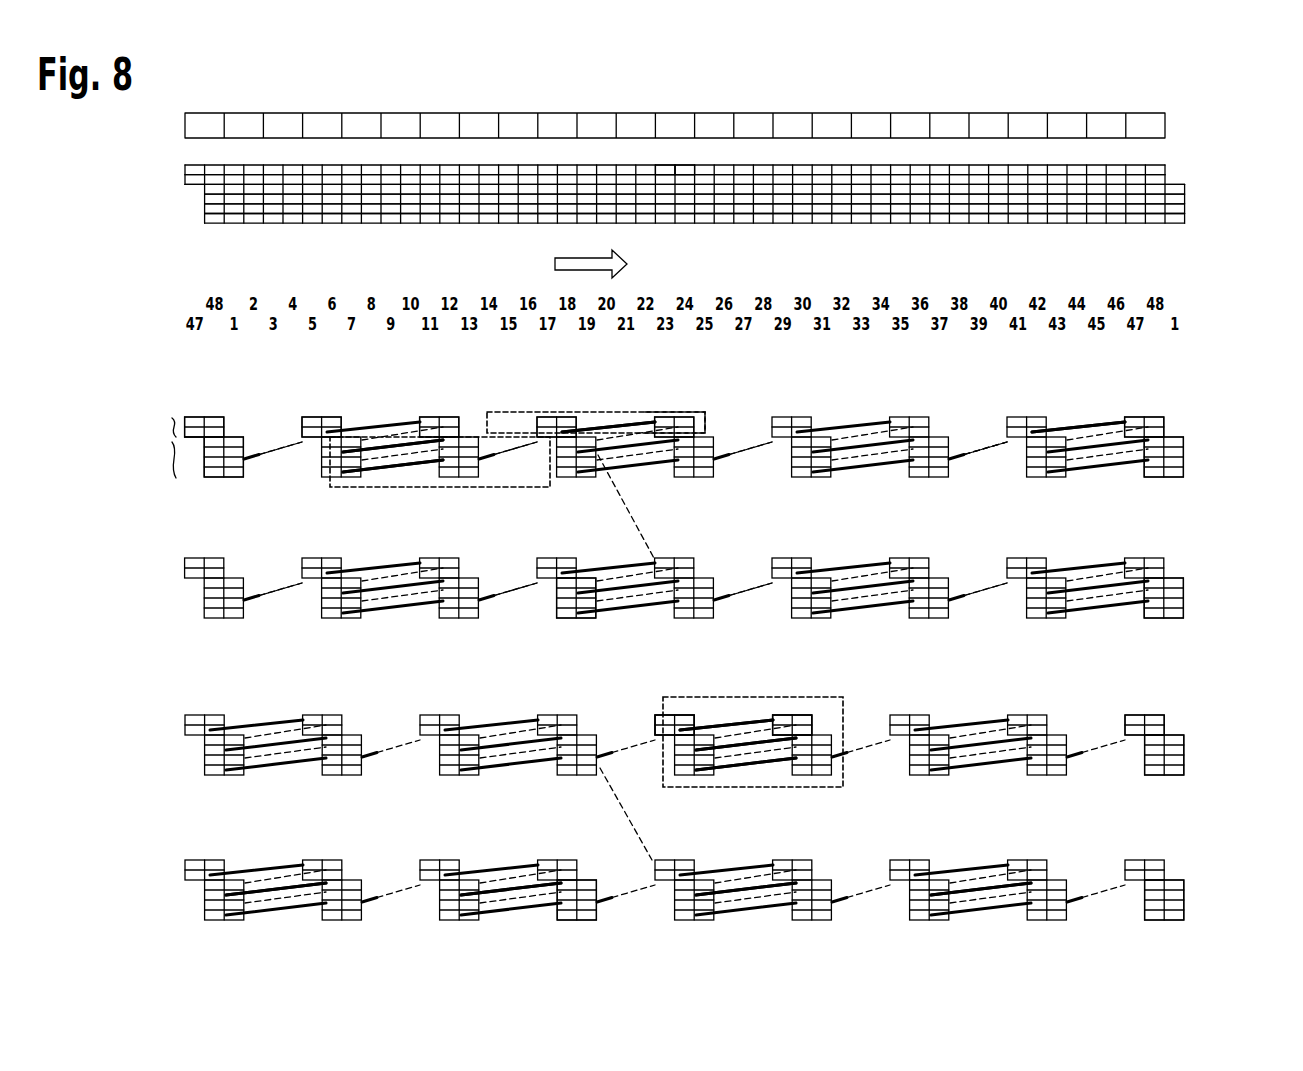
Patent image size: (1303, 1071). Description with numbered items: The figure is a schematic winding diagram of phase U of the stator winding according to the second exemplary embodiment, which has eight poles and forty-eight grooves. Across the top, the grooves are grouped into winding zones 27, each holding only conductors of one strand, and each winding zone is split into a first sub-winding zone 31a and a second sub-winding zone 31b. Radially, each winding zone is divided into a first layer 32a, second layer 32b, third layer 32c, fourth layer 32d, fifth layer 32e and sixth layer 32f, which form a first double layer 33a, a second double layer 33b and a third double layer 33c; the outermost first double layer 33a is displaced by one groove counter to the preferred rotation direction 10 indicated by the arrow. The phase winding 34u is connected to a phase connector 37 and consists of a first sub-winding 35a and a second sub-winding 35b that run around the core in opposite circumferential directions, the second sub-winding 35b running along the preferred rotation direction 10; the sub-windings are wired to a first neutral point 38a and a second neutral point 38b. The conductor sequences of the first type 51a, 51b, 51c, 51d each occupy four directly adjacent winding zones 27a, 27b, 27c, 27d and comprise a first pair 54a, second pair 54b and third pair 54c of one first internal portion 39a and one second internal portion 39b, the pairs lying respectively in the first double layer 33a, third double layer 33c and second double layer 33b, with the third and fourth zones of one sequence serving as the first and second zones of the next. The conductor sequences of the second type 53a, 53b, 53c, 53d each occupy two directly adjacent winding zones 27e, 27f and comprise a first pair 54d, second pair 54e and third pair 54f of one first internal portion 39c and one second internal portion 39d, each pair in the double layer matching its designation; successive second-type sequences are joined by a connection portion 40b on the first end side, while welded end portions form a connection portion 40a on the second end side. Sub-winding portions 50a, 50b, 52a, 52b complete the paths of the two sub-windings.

The preferred rotation direction 10 is at (555, 263).
The winding zone 27 is at (550, 163).
The first winding zone 27a is at (667, 417).
The second winding zone 27b is at (556, 417).
The third winding zone 27c is at (468, 420).
The fourth winding zone 27d is at (350, 420).
The winding zone of the second type 27e is at (718, 697).
The winding zone of the second type 27f is at (825, 712).
The first sub-winding zone 31a is at (657, 163).
The second sub-winding zone 31b is at (683, 163).
The first layer 32a is at (185, 168).
The second layer 32b is at (182, 178).
The third layer 32c is at (196, 190).
The fourth layer 32d is at (196, 200).
The fifth layer 32e is at (203, 213).
The sixth layer 32f is at (203, 218).
The first double layer 33a is at (174, 427).
The second double layer 33b is at (170, 442).
The third double layer 33c is at (184, 458).
The phase winding 34u is at (1215, 398).
The first sub-winding 35a is at (1197, 440).
The second sub-winding 35b is at (1195, 712).
The phase connector 37 is at (692, 381).
The first neutral point 38a is at (572, 620).
The second neutral point 38b is at (572, 928).
The first internal portion 39a is at (686, 410).
The second internal portion 39b is at (580, 463).
The first internal portion 39c is at (658, 722).
The second internal portion 39d is at (820, 722).
The connection portion 40a is at (1082, 430).
The connection portion 40b is at (975, 450).
The winding portion 50a is at (1197, 465).
The winding portion 50b is at (1197, 590).
The first conductor sequence of the first type 51a is at (520, 412).
The second conductor sequence of the first type 51b is at (265, 430).
The third conductor sequence of the first type 51c is at (950, 423).
The fourth conductor sequence of the first type 51d is at (745, 420).
The winding portion 52a is at (1205, 745).
The winding portion 52b is at (1205, 885).
The first conductor sequence of the second type 53a is at (810, 697).
The second conductor sequence of the second type 53b is at (1035, 612).
The third conductor sequence of the second type 53c is at (335, 612).
The fourth conductor sequence of the second type 53d is at (555, 610).
The first pair 54a is at (620, 423).
The second pair 54b is at (423, 470).
The third pair 54c is at (400, 468).
The first pair 54d is at (742, 725).
The second pair 54e is at (737, 772).
The third pair 54f is at (758, 773).